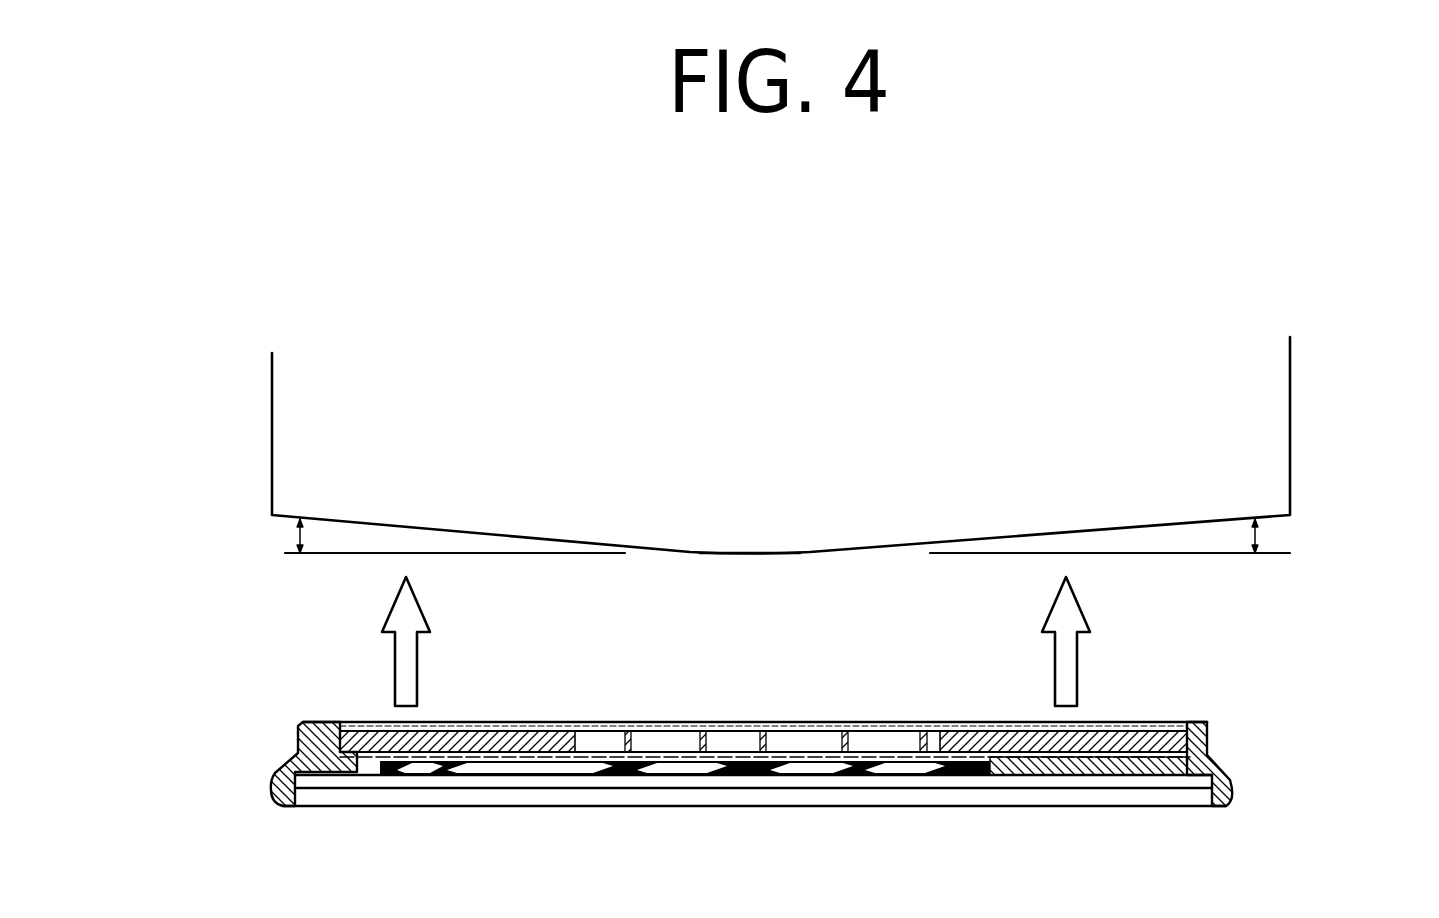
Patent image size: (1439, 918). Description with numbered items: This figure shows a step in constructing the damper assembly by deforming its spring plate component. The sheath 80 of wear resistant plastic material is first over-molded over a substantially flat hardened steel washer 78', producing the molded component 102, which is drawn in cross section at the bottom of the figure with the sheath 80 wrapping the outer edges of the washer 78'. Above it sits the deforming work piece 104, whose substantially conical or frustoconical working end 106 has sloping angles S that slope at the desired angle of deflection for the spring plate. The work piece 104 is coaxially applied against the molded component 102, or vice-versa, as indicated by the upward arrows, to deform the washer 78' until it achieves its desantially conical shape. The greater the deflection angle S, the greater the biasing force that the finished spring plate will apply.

The deforming work piece 104 is at (1255, 427).
The working end 106 is at (763, 554).
The sloping angles S is at (285, 533).
The molded component 102 is at (816, 707).
The annular sheath 80 is at (292, 760).
The substantially flat hardened steel washer 78' is at (763, 680).